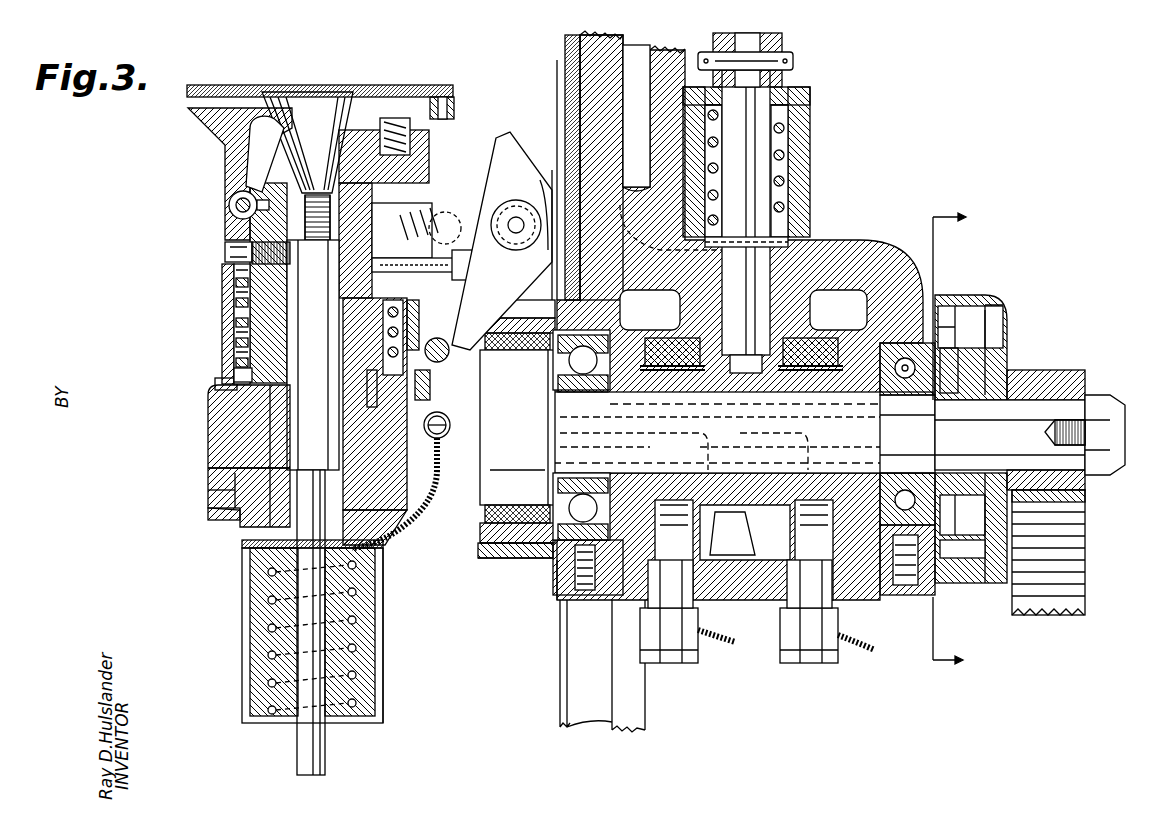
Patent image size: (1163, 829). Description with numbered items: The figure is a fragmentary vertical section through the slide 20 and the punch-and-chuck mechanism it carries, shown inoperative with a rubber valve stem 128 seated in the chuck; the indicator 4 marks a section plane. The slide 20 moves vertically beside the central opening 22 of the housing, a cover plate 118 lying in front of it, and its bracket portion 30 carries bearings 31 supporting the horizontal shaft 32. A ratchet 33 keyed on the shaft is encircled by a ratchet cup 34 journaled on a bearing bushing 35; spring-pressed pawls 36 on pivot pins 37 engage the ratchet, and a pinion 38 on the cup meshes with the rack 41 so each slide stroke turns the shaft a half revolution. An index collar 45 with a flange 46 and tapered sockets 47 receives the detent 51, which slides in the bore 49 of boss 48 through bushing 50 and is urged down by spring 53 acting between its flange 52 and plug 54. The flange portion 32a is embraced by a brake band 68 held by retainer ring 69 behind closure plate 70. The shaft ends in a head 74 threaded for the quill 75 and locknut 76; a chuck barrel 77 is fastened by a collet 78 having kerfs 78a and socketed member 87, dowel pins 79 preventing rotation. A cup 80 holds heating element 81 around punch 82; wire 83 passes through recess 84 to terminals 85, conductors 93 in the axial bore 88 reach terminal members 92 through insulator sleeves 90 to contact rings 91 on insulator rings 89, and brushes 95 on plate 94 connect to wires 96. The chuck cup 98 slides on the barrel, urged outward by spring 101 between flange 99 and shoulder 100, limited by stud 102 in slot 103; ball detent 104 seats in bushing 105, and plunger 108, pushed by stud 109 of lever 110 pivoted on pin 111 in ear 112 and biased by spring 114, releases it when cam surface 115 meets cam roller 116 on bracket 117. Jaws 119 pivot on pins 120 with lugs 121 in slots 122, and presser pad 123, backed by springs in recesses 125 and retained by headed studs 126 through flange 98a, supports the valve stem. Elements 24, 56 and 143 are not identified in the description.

The section line 4- 4 is at (958, 441).
The slide 20 is at (600, 63).
The central vertical slot 22 is at (640, 60).
The column 24 is at (600, 712).
The bracket portion 30 is at (893, 255).
The bearings 31 is at (900, 300).
The horizontal shaft 32 is at (638, 330).
The enlarged flange portion 32a is at (430, 530).
The ratchet 33 is at (960, 310).
The ratchet cup 34 is at (1000, 300).
The bearing bushing 35 is at (1035, 375).
The spring-pressed pawls 36 is at (962, 565).
The pivot pins 37 is at (1000, 332).
The pinion 38 is at (1085, 395).
The rack 41 is at (1080, 592).
The index collar 45 is at (790, 342).
The medial circumferential flange 46 is at (722, 575).
The tapered sockets 47 is at (762, 560).
The upstanding boss 48 is at (810, 125).
The axial bore 49 is at (792, 162).
The tubular bushing 50 is at (722, 245).
The detent 51 is at (790, 243).
The circumferential flange 52 is at (790, 240).
The compression spring 53 is at (708, 140).
The plug 54 is at (795, 87).
The cap 56 is at (785, 46).
The brake band 68 is at (490, 565).
The retainer ring 69 is at (508, 565).
The closure plate 70 is at (483, 558).
The ring-shaped head 74 is at (240, 455).
The quill 75 is at (240, 480).
The locknut 76 is at (212, 510).
The chuck barrel 77 is at (222, 290).
The tubular collet 78 is at (210, 420).
The kerfs 78a is at (215, 490).
The dowel pins 79 is at (240, 380).
The metal cup 80 is at (243, 575).
The electrical heating element 81 is at (265, 615).
The punch 82 is at (297, 746).
The conductive wire 83 is at (410, 540).
The recess 84 is at (385, 560).
The terminals 85 is at (445, 408).
The socketed member 87 is at (215, 440).
The axial bore 88 is at (558, 422).
The insulator rings 89 is at (678, 350).
The tubular insulator sleeve 90 is at (880, 448).
The metal contact ring 91 is at (656, 346).
The metal terminal member 92 is at (850, 448).
The conductor wires 93 is at (600, 428).
The bracket plate 94 is at (557, 602).
The electrical brushes 95 is at (810, 445).
The conductor wires 96 is at (712, 640).
The chuck cup 98 is at (236, 322).
The circumferential flange 98a is at (190, 112).
The external peripheral flange 99 is at (226, 362).
The circumferential shoulder 100 is at (230, 305).
The compression spring 101 is at (238, 340).
The stud 102 is at (228, 247).
The slot 103 is at (255, 268).
The ball detent 104 is at (470, 330).
The tubular bushing 105 is at (330, 238).
The plunger 108 is at (455, 222).
The stud 109 is at (475, 265).
The lever 110 is at (398, 320).
The pivot pin 111 is at (481, 388).
The ear 112 is at (484, 358).
The compression spring 114 is at (518, 215).
The cam surface 115 is at (542, 210).
The cam roller 116 is at (545, 185).
The bracket 117 is at (562, 200).
The cover plate 118 is at (571, 60).
The chuck jaws 119 is at (255, 125).
The pivot pins 120 is at (240, 200).
The tooth-shaped lug 121 is at (228, 215).
The slot 122 is at (300, 280).
The presser pad 123 is at (212, 85).
The recesses 125 is at (405, 140).
The headed studs 126 is at (440, 100).
The rubber valve stem 128 is at (312, 92).
The spring 143 is at (440, 213).